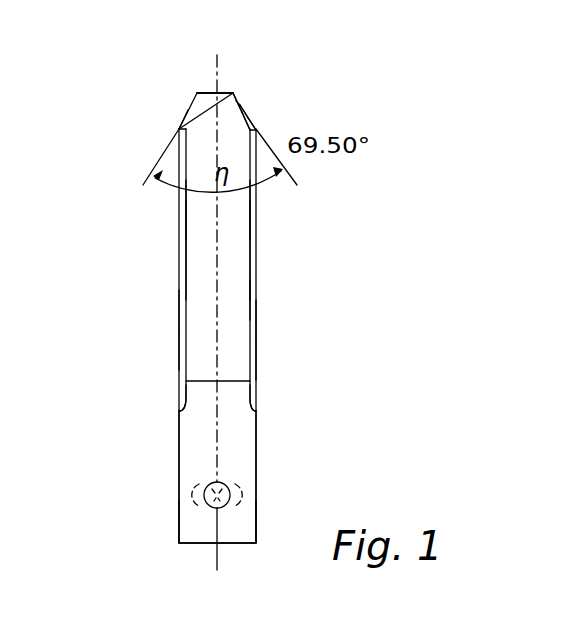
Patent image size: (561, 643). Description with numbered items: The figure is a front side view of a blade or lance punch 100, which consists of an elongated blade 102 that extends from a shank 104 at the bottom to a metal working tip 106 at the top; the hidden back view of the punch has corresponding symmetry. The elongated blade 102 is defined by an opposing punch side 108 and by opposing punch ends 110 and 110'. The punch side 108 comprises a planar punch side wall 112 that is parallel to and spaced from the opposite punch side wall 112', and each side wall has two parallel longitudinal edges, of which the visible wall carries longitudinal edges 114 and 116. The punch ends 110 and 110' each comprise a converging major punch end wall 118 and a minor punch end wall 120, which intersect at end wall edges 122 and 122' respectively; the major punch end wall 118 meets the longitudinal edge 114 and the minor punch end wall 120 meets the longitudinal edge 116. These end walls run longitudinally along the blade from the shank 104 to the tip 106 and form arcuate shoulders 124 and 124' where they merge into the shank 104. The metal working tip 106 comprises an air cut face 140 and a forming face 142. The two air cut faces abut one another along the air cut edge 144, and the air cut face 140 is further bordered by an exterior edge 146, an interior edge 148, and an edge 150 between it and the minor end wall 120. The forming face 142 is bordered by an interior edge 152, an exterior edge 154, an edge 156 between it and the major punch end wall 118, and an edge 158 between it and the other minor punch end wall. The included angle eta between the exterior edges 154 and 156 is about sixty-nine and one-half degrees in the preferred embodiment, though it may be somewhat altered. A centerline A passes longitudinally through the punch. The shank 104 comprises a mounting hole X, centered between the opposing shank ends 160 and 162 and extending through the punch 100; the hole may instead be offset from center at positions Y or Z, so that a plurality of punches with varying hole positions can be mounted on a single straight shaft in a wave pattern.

The blade or lance punch 100 is at (329, 443).
The elongated blade 102 is at (283, 274).
The shank 104 is at (271, 425).
The metal working tip 106 is at (298, 87).
The punch side 108 is at (239, 342).
The punch end 110 is at (292, 250).
The punch end 110' is at (135, 250).
The punch side wall 112 is at (284, 300).
The punch side wall 112' is at (195, 46).
The longitudinal edge 114 is at (250, 213).
The longitudinal edge 116 is at (185, 225).
The major punch end wall 118 is at (258, 325).
The minor punch end wall 120 is at (180, 312).
The end wall edge 122 is at (309, 360).
The end wall edge 122' is at (137, 350).
The arcuate shoulder 124 is at (296, 395).
The arcuate shoulder 124' is at (139, 410).
The air cut face 140 is at (192, 107).
The forming face 142 is at (252, 110).
The air cut edge 144 is at (221, 92).
The exterior edge 146 is at (183, 120).
The interior edge 148 is at (215, 103).
The edge 150 is at (179, 129).
The interior edge 152 is at (253, 117).
The exterior edge 154 is at (245, 100).
The edge 156 is at (257, 127).
The edge 158 is at (257, 125).
The shank end 160 is at (257, 522).
The shank end 162 is at (178, 513).
The longitudinal axis A is at (223, 325).
The mounting hole X is at (218, 482).
The offset mounting hole position Y is at (240, 483).
The offset mounting hole position Z is at (193, 487).